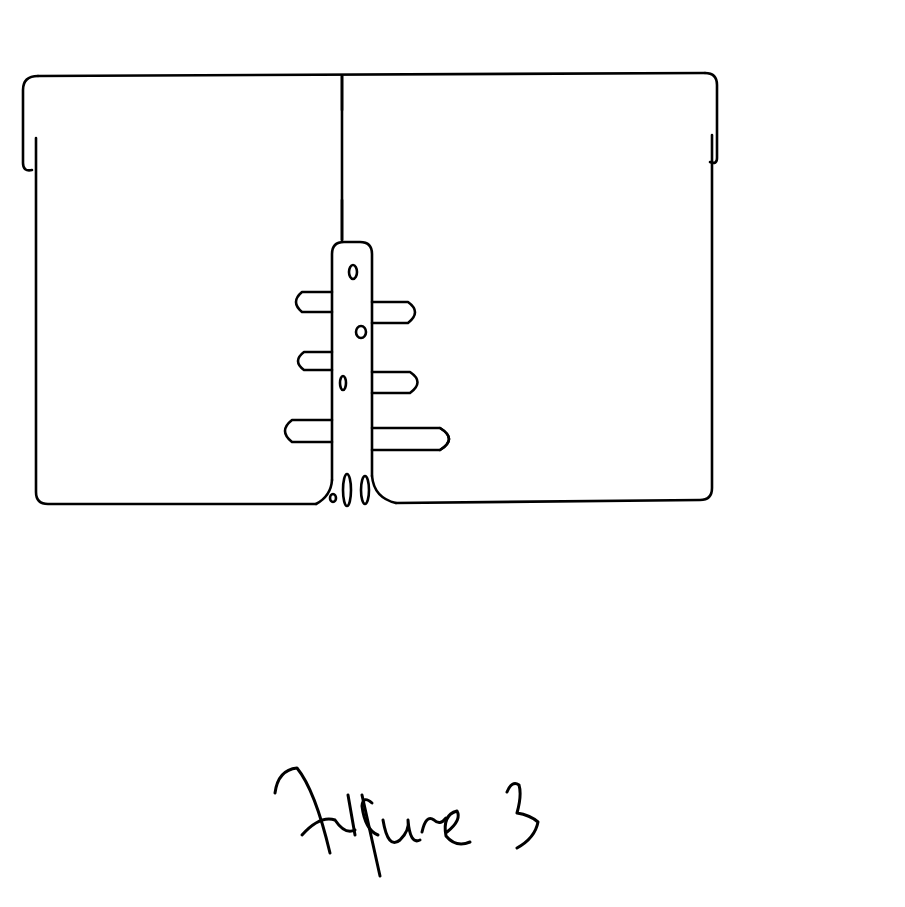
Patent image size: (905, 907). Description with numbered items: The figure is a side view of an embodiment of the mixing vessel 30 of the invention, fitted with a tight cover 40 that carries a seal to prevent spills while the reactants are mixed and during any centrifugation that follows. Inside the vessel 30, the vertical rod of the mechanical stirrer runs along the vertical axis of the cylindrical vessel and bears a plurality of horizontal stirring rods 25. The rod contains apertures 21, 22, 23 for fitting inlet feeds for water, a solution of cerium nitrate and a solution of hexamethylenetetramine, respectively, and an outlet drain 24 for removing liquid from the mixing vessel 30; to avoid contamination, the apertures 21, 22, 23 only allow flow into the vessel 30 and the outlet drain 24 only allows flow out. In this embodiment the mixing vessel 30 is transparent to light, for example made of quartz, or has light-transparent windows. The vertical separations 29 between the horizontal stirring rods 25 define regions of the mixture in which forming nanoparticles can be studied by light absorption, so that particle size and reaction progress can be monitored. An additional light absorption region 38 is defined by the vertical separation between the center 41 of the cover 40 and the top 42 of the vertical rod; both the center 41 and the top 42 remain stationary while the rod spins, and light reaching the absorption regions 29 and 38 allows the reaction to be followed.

The aperture 21 is at (348, 264).
The aperture 22 is at (355, 332).
The aperture 23 is at (339, 384).
The outlet drain 24 is at (362, 512).
The horizontal stirring rods 25 is at (462, 430).
The vertical separations 29 is at (428, 383).
The mixing vessel 30 is at (722, 270).
The additional light absorption region 38 is at (330, 83).
The cover 40 is at (272, 12).
The center of the cover 41 is at (348, 78).
The top of the vertical rod 42 is at (345, 237).